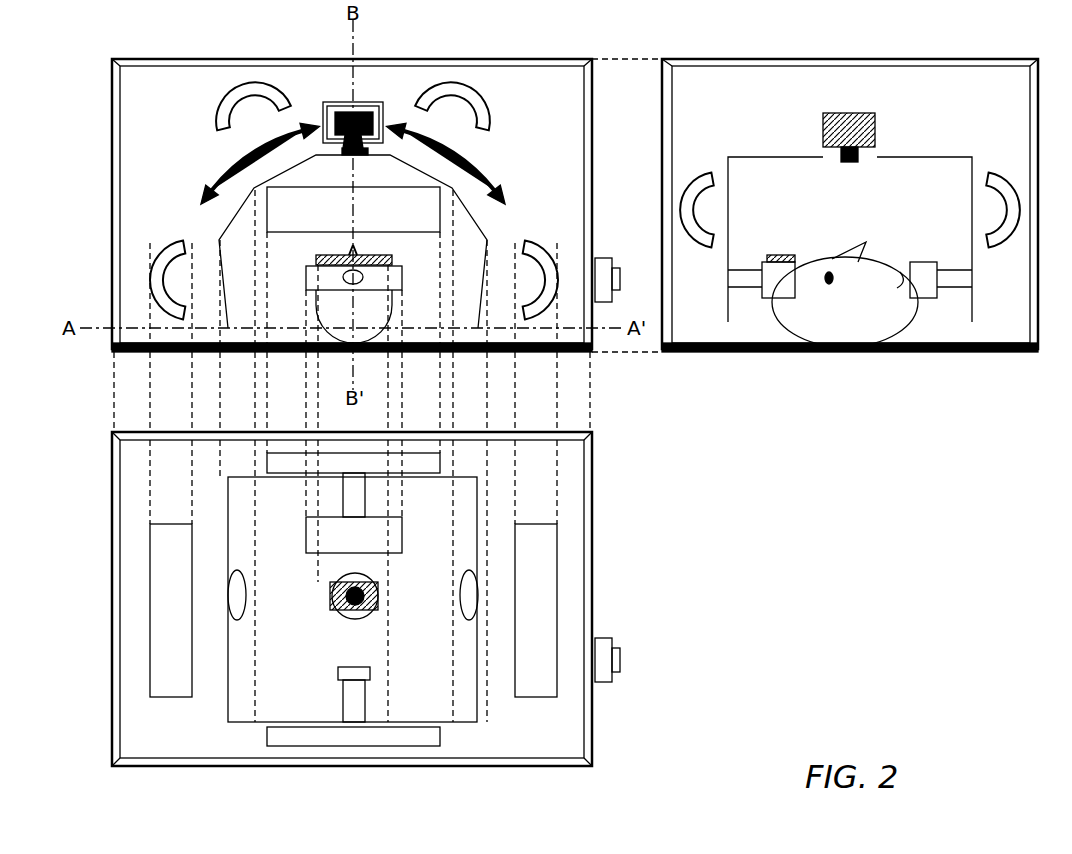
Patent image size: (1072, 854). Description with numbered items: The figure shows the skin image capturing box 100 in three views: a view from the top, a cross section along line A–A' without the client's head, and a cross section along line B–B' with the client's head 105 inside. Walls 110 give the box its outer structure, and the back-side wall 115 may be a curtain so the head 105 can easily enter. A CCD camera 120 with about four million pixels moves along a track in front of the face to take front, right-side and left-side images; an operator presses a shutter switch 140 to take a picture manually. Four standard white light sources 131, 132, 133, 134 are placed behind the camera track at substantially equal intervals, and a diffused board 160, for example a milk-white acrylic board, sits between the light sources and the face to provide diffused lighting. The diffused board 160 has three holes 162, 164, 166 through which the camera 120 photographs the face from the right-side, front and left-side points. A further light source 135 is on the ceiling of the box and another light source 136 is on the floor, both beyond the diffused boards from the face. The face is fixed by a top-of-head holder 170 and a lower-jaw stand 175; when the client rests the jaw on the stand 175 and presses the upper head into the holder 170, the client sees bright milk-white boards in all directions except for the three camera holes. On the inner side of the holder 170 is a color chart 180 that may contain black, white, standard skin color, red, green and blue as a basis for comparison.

The skin image capturing box 100 is at (58, 28).
The head 105 is at (392, 318).
The walls 110 is at (530, 58).
The back-side wall 115 is at (573, 355).
The CCD camera 120 is at (360, 100).
The light source 131 is at (552, 250).
The light source 132 is at (488, 108).
The light source 133 is at (220, 108).
The light source 134 is at (155, 250).
The light source 135 is at (262, 212).
The light source 136 is at (992, 174).
The shutter switch 140 is at (612, 258).
The diffused board 160 is at (483, 222).
The hole 162 is at (462, 612).
The hole 164 is at (866, 160).
The hole 166 is at (246, 614).
The top-of-head holder 170 is at (306, 275).
The lower-jaw stand 175 is at (945, 271).
The color chart 180 is at (392, 258).